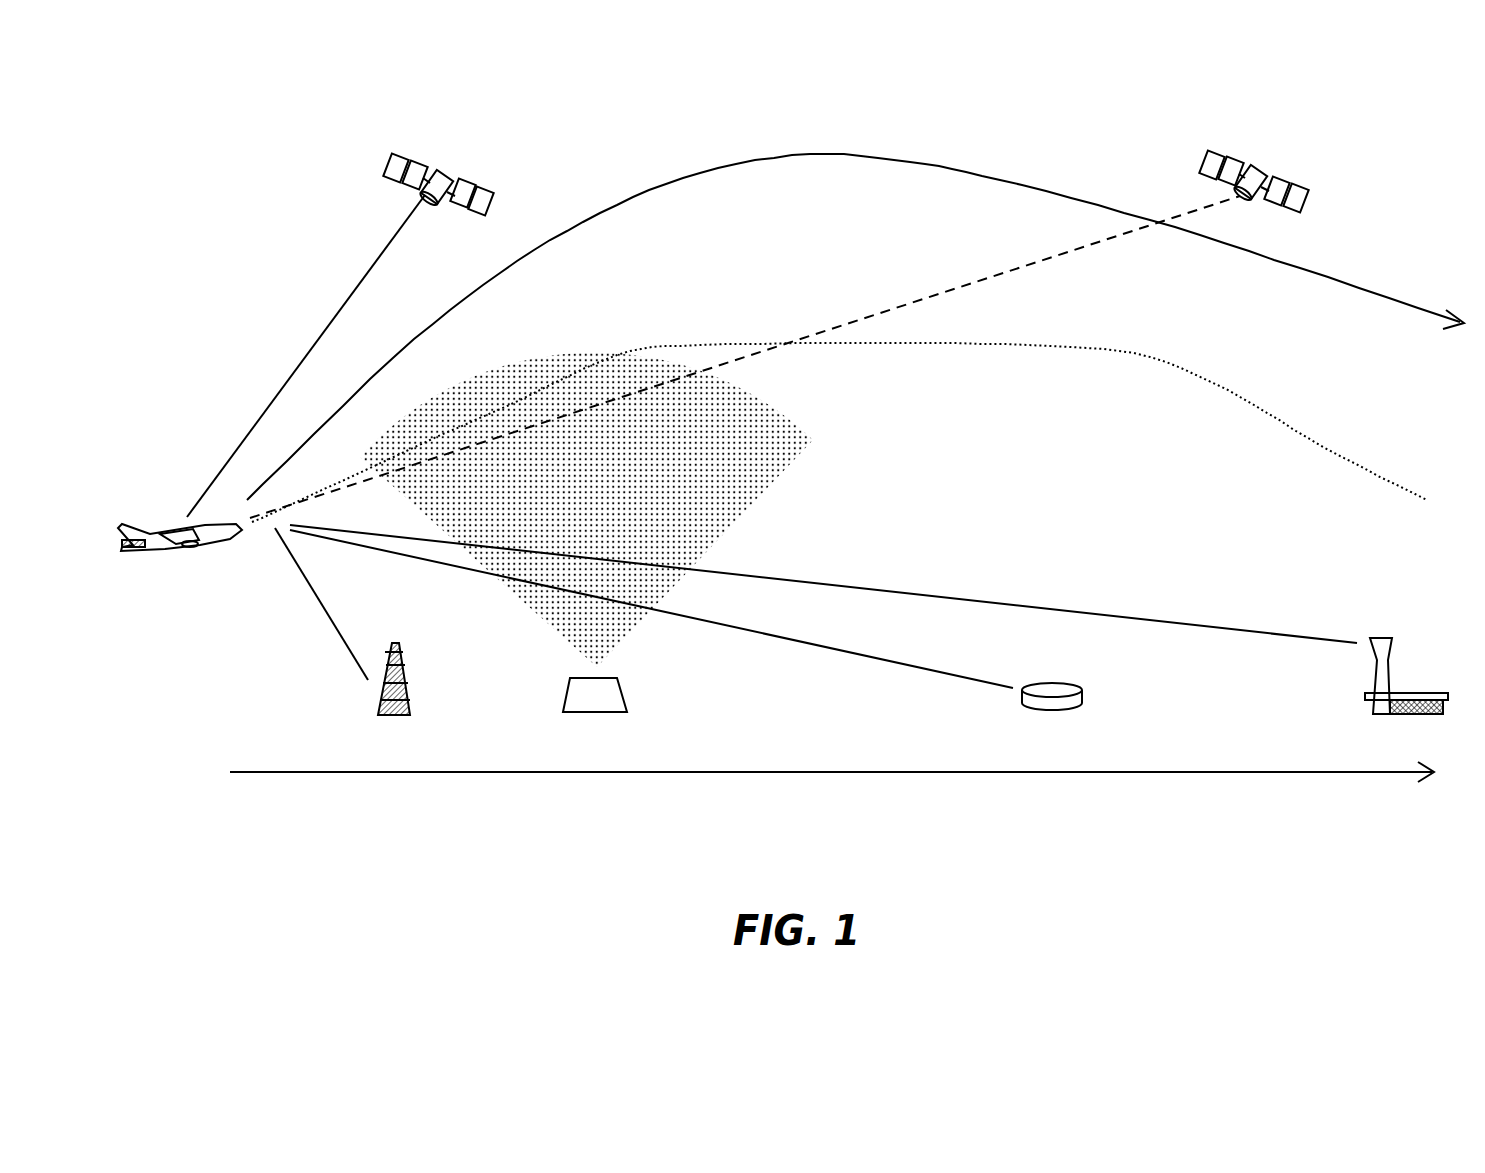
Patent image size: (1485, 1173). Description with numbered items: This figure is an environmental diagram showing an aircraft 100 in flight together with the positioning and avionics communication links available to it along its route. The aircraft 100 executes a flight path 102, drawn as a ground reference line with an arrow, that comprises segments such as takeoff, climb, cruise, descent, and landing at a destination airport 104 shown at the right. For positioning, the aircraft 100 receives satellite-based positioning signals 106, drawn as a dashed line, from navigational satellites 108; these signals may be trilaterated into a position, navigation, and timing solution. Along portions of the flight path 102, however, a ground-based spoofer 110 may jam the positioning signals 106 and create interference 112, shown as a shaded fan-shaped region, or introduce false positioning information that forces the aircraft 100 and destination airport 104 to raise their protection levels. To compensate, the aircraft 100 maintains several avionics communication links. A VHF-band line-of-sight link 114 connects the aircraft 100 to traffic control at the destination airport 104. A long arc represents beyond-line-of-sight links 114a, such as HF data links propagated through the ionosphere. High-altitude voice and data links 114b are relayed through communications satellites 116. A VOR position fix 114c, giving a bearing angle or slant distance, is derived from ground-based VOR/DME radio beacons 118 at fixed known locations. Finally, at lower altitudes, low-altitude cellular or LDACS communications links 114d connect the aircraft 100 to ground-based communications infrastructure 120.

The aircraft 100 is at (147, 537).
The flight path 102 is at (300, 770).
The destination airport 104 is at (1405, 692).
The positioning signals 106 is at (1042, 262).
The navigational satellites 108 is at (1262, 170).
The spoofer 110 is at (595, 712).
The interference 112 is at (706, 497).
The avionics-based communication links 114 is at (955, 598).
The avionics communications links beyond visual line of sight 114a is at (910, 162).
The high-altitude voice and/or data links 114b is at (300, 362).
The VOR position fix 114c is at (832, 650).
The low-altitude communications links 114d is at (305, 580).
The communications satellites 116 is at (388, 165).
The VOR/DME radio beacons 118 is at (1083, 698).
The ground-based communications infrastructure 120 is at (412, 678).